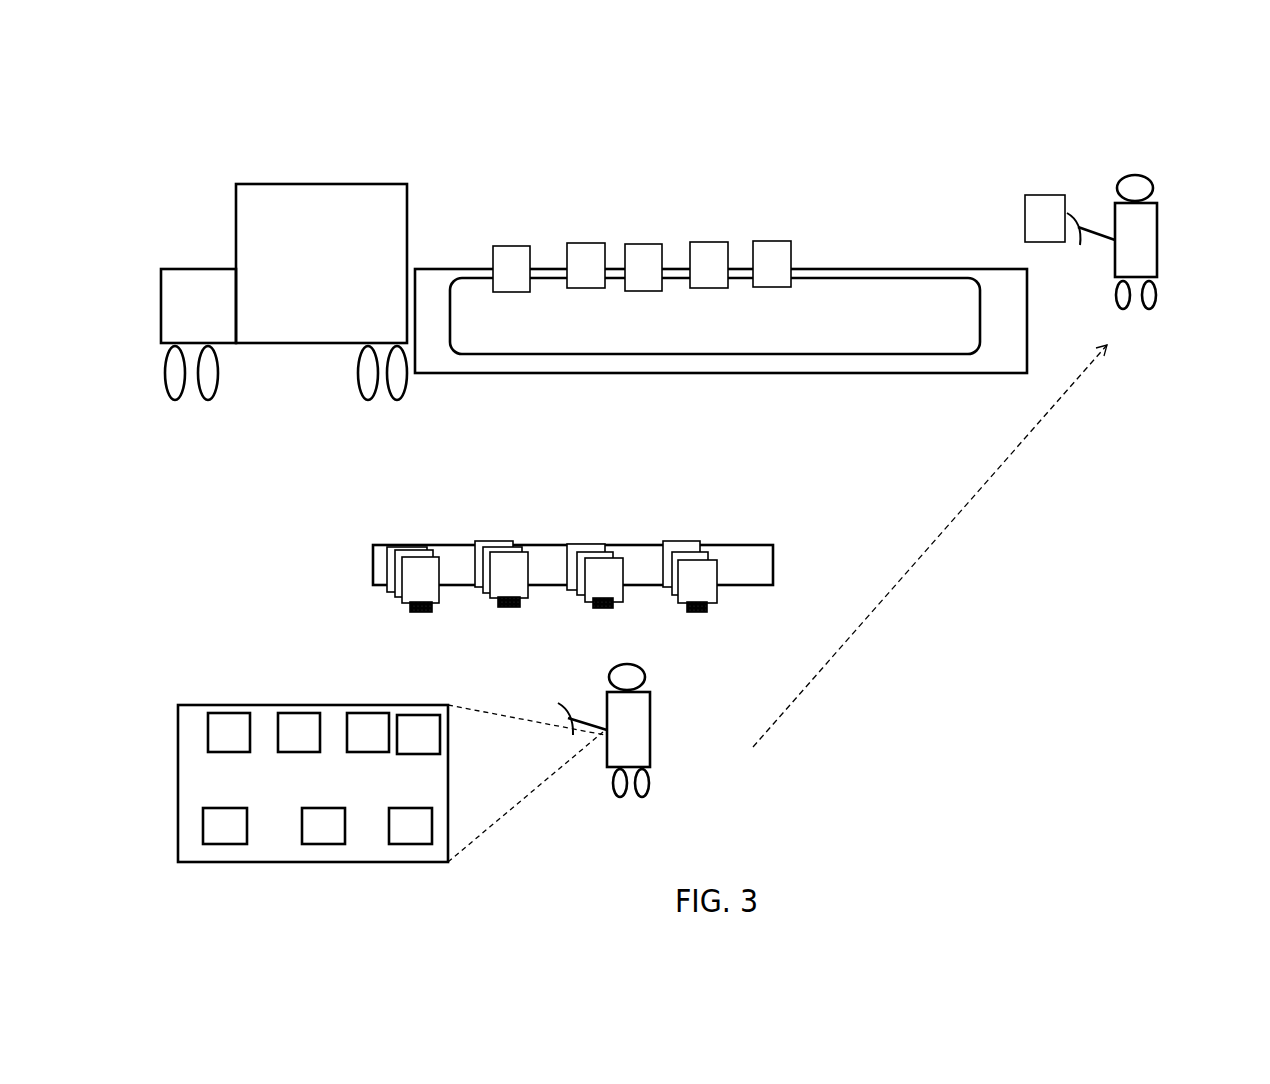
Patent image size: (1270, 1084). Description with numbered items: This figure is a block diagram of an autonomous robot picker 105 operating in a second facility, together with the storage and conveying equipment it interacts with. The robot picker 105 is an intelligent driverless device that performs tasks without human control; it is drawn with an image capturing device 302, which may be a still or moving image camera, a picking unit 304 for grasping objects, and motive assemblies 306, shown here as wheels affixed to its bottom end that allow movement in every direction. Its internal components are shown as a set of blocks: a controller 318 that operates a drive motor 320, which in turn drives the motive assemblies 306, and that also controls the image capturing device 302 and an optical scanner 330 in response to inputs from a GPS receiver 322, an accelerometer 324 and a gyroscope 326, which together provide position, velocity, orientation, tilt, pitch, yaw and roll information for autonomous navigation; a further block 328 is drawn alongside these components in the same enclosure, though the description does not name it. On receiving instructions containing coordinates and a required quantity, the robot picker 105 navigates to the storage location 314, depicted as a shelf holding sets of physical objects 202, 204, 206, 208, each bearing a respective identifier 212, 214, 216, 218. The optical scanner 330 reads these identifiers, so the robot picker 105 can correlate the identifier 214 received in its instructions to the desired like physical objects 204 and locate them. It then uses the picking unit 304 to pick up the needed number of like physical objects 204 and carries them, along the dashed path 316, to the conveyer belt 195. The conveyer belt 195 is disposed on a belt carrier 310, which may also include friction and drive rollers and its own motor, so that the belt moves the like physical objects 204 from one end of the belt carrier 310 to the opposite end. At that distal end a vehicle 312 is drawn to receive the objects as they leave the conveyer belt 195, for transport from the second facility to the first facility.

The autonomous robot picker 105 is at (1158, 236).
The conveyer belt 195 is at (848, 343).
The set of physical objects 202 is at (387, 577).
The like physical objects 204 is at (512, 245).
The set of physical objects 206 is at (623, 587).
The set of physical objects 208 is at (717, 587).
The identifier 212 is at (420, 613).
The identifier 214 is at (510, 612).
The identifier 216 is at (605, 608).
The identifier 218 is at (697, 612).
The image capturing device 302 is at (1153, 190).
The picking unit 304 is at (1083, 227).
The motive assemblies 306 is at (1115, 295).
The belt carrier 310 is at (720, 372).
The delivery truck 312 is at (322, 345).
The storage location 314 is at (387, 512).
The path 316 is at (953, 540).
The controller 318 is at (227, 713).
The drive motor 320 is at (298, 713).
The GPS receiver 322 is at (367, 713).
The accelerometer 324 is at (412, 807).
The gyroscope 326 is at (313, 807).
The storage location 328 is at (218, 807).
The optical scanner 330 is at (423, 713).